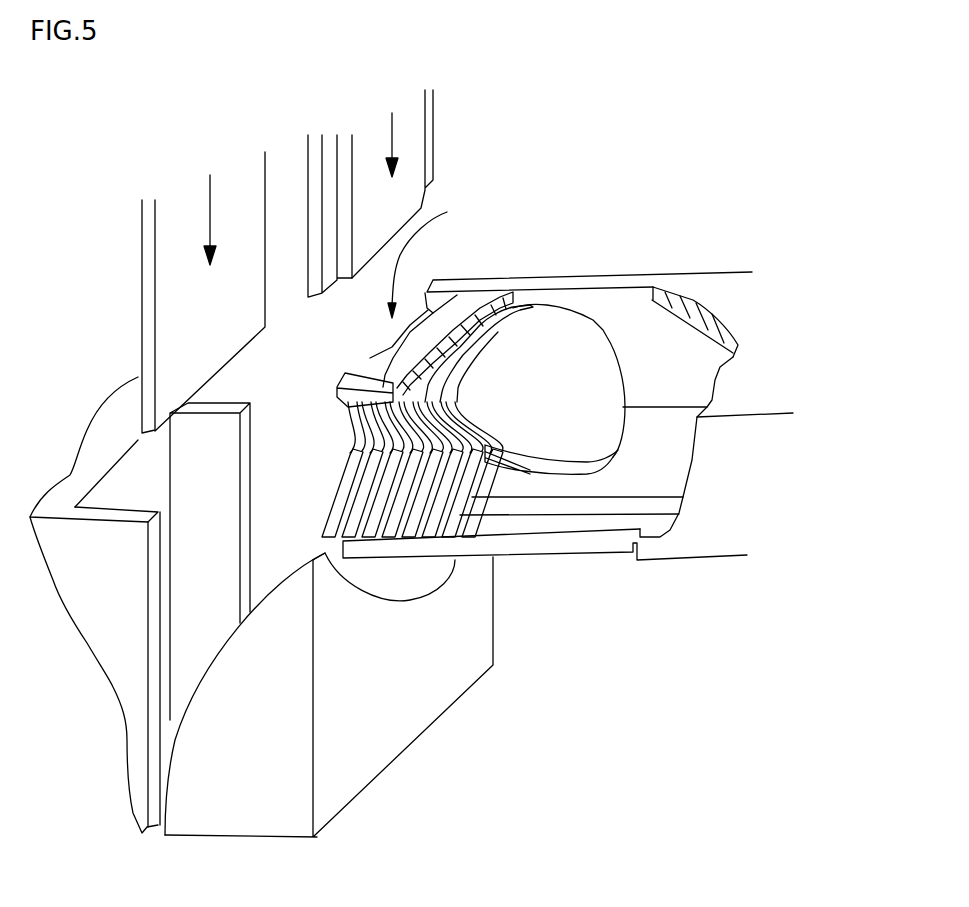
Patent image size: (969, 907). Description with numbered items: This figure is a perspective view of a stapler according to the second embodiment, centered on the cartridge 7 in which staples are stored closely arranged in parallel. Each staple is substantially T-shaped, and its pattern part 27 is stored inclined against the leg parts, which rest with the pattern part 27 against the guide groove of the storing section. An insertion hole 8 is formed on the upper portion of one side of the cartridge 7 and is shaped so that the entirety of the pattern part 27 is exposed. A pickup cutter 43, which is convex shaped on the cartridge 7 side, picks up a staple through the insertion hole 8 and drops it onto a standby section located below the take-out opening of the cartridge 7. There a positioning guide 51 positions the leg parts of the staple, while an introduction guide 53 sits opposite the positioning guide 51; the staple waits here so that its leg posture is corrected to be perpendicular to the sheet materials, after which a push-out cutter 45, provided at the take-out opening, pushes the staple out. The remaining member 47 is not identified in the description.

The cartridge 7 is at (632, 272).
The insertion hole 8 is at (424, 260).
The pattern part 27 is at (582, 395).
The pickup cutter 43 is at (412, 150).
The push-out cutter 45 is at (167, 283).
The support block 47 is at (205, 628).
The positioning guide 51 is at (132, 695).
The introduction guide 53 is at (423, 690).